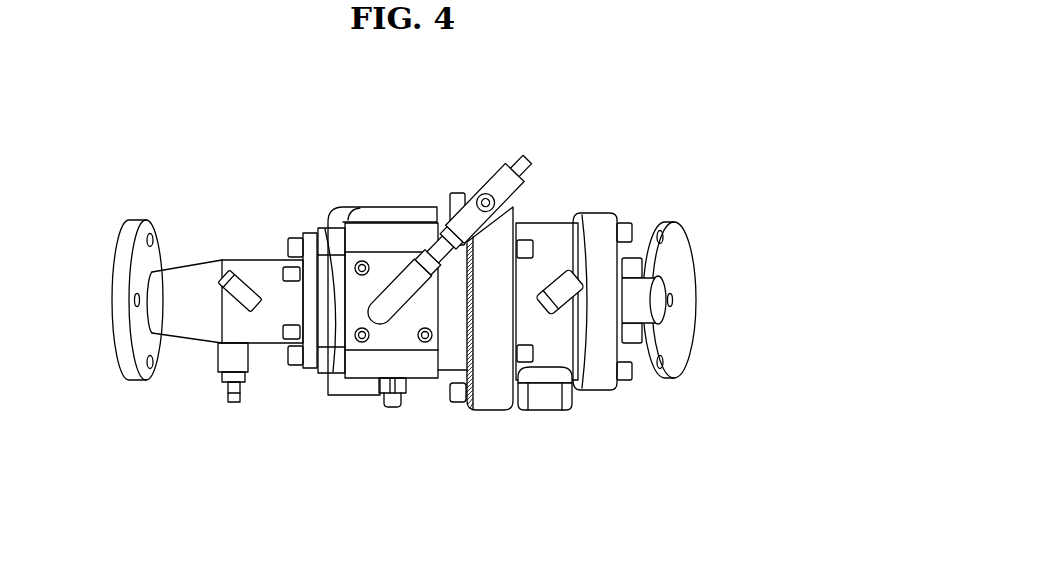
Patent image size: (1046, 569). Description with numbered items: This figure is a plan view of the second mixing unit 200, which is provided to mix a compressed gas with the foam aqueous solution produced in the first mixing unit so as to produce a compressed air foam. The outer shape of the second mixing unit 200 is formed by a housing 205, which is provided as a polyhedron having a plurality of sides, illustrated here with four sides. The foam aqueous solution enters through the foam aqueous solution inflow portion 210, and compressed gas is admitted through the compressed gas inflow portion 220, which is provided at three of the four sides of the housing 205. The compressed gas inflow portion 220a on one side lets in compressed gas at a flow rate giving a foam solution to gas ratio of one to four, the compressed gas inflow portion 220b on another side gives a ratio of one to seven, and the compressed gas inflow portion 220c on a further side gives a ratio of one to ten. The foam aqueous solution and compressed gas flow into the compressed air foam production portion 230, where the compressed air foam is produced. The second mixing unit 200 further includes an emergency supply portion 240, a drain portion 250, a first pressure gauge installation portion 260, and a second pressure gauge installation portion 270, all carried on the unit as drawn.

The second mixing unit 200 is at (636, 182).
The housing 205 is at (680, 354).
The foam aqueous solution inflow portion 210 is at (648, 293).
The compressed gas inflow portion 220 is at (373, 375).
The compressed gas inflow portion 220a is at (363, 340).
The compressed gas inflow portion 220b is at (333, 377).
The compressed gas inflow portion 220c is at (423, 380).
The compressed air foam production portion 230 is at (320, 275).
The emergency supply portion 240 is at (545, 400).
The drain portion 250 is at (228, 368).
The first pressure gauge installation portion 260 is at (560, 277).
The second pressure gauge installation portion 270 is at (233, 272).